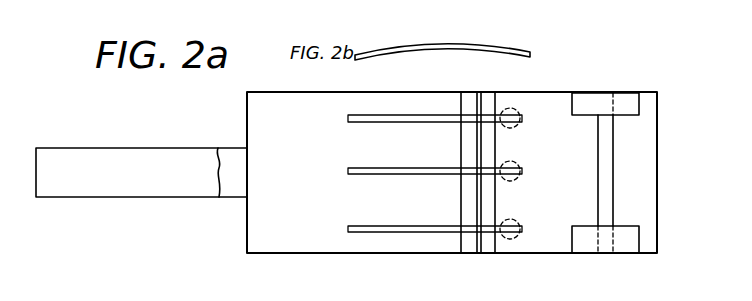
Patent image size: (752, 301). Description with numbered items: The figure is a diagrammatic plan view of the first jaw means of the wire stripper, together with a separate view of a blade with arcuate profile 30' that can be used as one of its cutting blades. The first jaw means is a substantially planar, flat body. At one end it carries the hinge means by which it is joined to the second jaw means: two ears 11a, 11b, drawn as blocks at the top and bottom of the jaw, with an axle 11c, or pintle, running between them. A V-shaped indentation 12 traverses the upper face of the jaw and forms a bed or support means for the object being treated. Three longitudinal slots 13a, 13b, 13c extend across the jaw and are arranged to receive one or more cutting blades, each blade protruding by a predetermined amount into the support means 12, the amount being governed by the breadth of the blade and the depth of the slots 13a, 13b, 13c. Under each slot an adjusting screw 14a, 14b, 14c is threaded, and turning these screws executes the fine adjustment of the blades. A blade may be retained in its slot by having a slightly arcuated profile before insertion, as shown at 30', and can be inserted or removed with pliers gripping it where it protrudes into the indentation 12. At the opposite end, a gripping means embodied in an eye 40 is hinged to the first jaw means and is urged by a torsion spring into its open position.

In FIG. 2A, the eye 40 is at (118, 160).
In FIG. 2A, the V-shaped indentation 12 is at (486, 101).
In FIG. 2A, the longitudinal slot 13a is at (410, 234).
In FIG. 2A, the longitudinal slot 13b is at (393, 175).
In FIG. 2A, the longitudinal slot 13c is at (385, 123).
In FIG. 2A, the adjusting screw 14a is at (517, 219).
In FIG. 2A, the adjusting screw 14b is at (517, 163).
In FIG. 2A, the adjusting screw 14c is at (522, 97).
In FIG. 2A, the ear 11a is at (628, 245).
In FIG. 2A, the ear 11b is at (598, 108).
In FIG. 2A, the axle 11c is at (614, 173).
In FIG. 2B, the blade with arcuate profile 30' is at (430, 35).